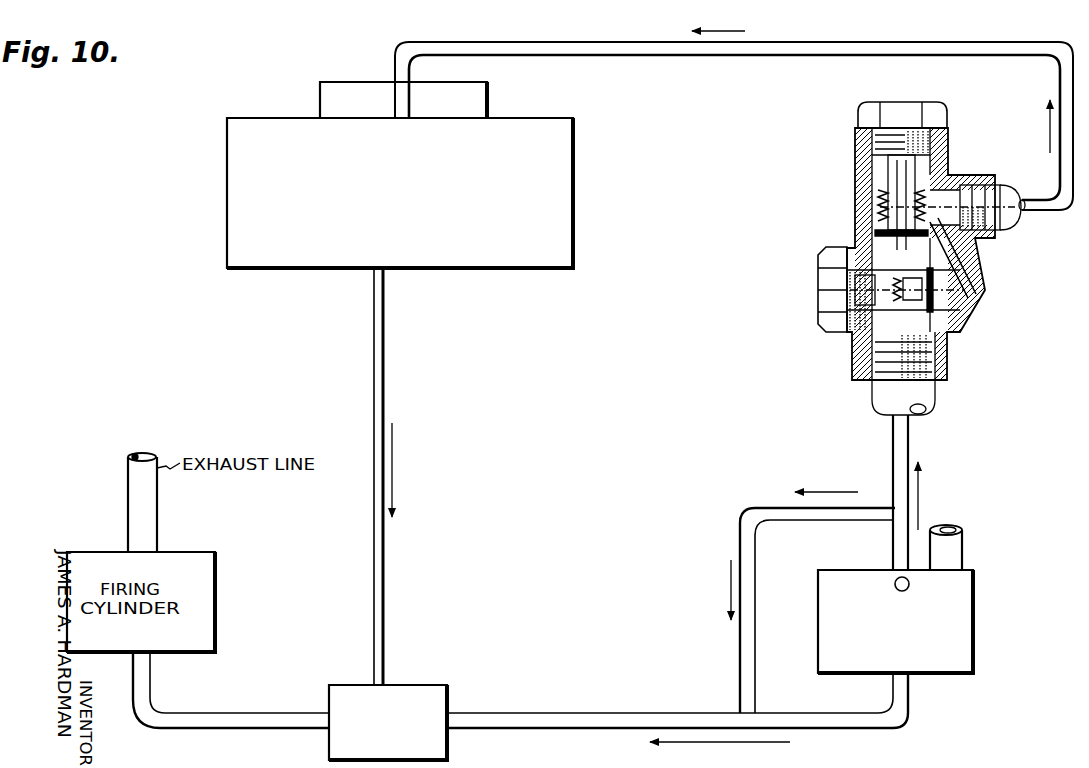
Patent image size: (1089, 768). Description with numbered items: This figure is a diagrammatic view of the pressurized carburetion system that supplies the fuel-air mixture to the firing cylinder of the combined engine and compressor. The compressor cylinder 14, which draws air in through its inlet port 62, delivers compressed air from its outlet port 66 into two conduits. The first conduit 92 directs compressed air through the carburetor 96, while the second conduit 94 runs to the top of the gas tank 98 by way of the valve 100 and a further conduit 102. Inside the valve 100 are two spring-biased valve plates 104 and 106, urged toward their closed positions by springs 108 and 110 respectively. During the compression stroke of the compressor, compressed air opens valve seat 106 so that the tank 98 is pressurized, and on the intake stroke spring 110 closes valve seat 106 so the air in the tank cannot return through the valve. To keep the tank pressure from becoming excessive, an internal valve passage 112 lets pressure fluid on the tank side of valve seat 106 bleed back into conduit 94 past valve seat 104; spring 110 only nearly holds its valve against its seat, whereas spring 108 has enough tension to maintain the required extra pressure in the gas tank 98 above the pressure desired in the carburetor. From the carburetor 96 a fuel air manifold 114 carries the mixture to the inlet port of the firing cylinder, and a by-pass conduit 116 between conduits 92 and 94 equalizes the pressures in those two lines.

The compressor cylinder 14 is at (926, 605).
The inlet port 62 is at (962, 548).
The outlet port 66 is at (899, 578).
The conduit 92 is at (908, 697).
The conduit 94 is at (908, 448).
The carburetor 96 is at (447, 690).
The gas tank 98 is at (576, 163).
The valve 100 is at (896, 258).
The conduit 102 is at (722, 62).
The valve plate 104 is at (950, 326).
The valve plate 106 is at (965, 252).
The spring 108 is at (850, 332).
The spring 110 is at (875, 215).
The internal valve passage 112 is at (968, 272).
The fuel air manifold 114 is at (288, 712).
The by-pass conduit 116 is at (740, 538).